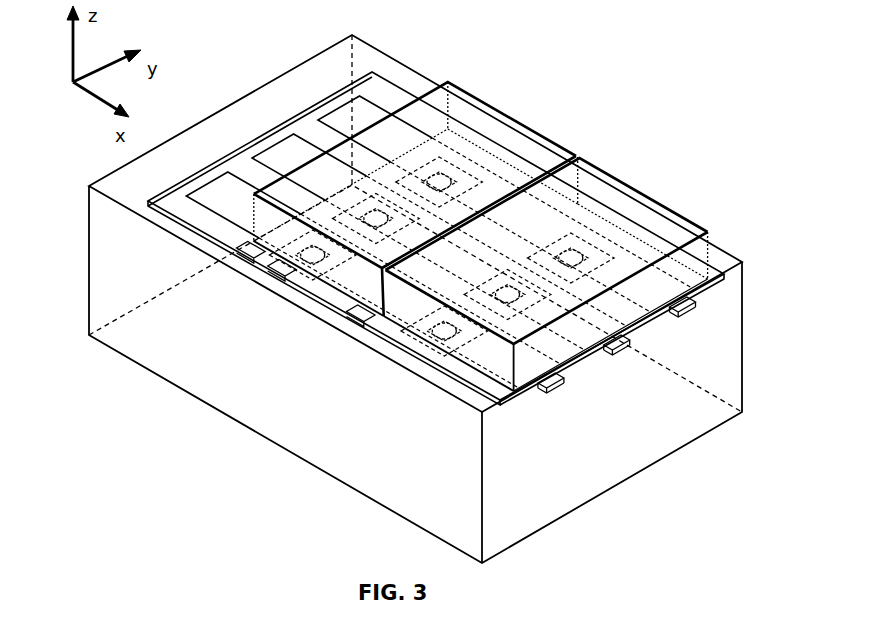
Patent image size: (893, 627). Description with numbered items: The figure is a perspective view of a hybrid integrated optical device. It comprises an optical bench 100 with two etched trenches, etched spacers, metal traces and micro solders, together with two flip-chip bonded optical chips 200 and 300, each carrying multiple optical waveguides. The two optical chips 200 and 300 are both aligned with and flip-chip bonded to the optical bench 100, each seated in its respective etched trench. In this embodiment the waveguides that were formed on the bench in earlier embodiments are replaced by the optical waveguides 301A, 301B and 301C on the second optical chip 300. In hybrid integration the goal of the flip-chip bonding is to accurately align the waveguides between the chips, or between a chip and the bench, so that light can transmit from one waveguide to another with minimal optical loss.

The optical bench 100 is at (288, 304).
The optical chip 200 is at (517, 122).
The second optical chip 300 is at (645, 193).
The optical waveguide 301A is at (685, 304).
The optical waveguide 301B is at (612, 341).
The optical waveguide 301C is at (547, 376).